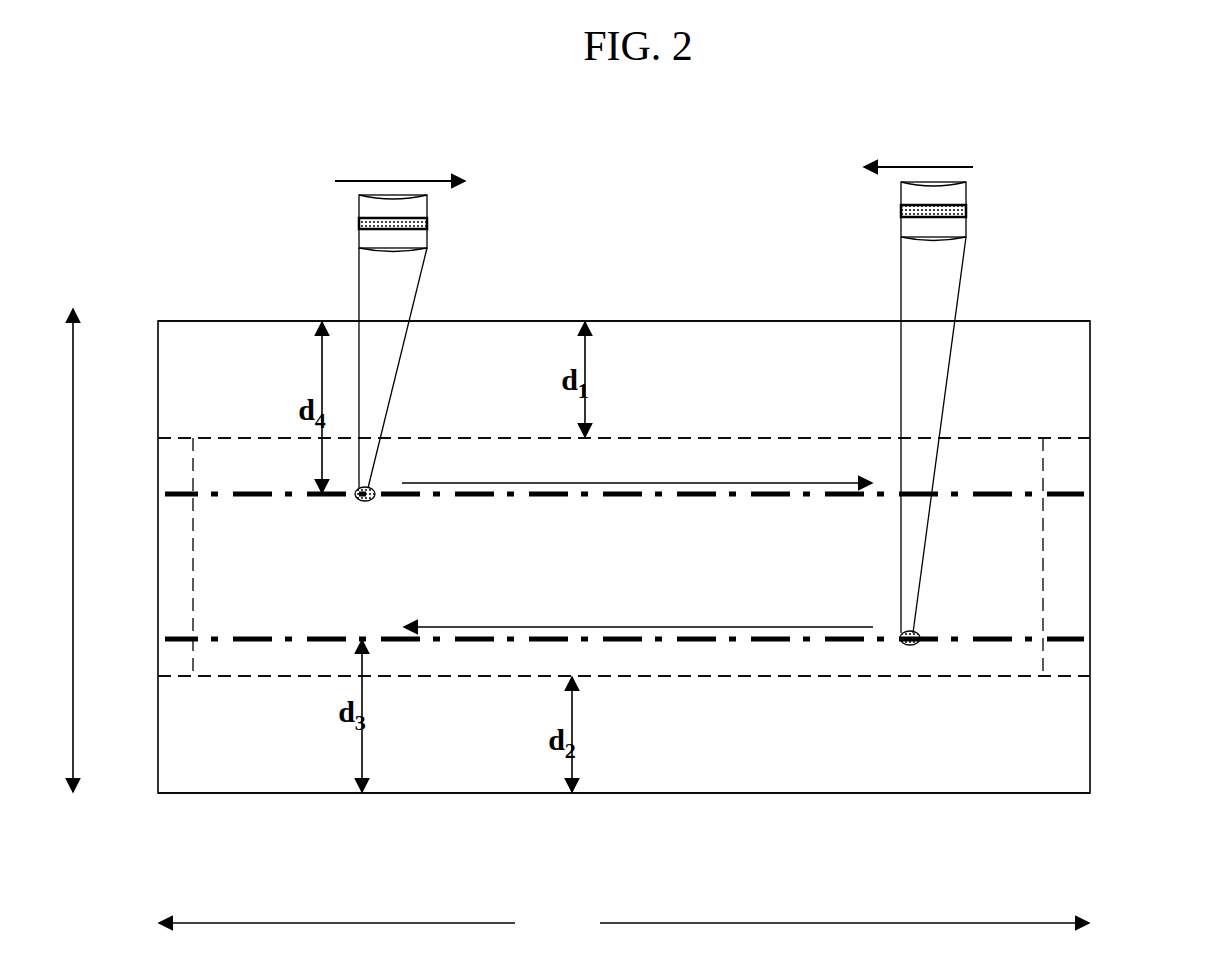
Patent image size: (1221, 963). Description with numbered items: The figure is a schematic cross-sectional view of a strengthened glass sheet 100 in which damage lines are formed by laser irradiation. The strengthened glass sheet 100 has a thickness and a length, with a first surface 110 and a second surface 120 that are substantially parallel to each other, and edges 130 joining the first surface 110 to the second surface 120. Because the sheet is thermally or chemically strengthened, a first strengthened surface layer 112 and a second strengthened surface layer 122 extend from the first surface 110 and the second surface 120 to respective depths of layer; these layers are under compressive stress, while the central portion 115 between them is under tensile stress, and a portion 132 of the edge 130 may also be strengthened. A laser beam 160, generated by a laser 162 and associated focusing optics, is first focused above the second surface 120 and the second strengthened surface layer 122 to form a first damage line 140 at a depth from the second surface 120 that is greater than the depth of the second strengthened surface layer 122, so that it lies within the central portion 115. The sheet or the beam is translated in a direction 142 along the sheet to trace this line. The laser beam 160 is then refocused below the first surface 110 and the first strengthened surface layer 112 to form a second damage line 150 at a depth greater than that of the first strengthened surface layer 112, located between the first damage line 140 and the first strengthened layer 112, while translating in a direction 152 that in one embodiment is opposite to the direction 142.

The strengthened glass sheet 100 is at (599, 135).
The first surface 110 is at (278, 318).
The first strengthened surface layer 112 is at (624, 380).
The central portion 115 is at (624, 557).
The second surface 120 is at (396, 800).
The second strengthened surface layer 122 is at (624, 734).
The edge 130 is at (1099, 762).
The strengthened portion of edge 132 is at (1074, 537).
The first damage line 140 is at (624, 619).
The direction of translation 142 is at (688, 375).
The second damage line 150 is at (624, 474).
The direction of translation 152 is at (603, 312).
The laser beam 160 is at (374, 486).
The laser 162 is at (432, 223).